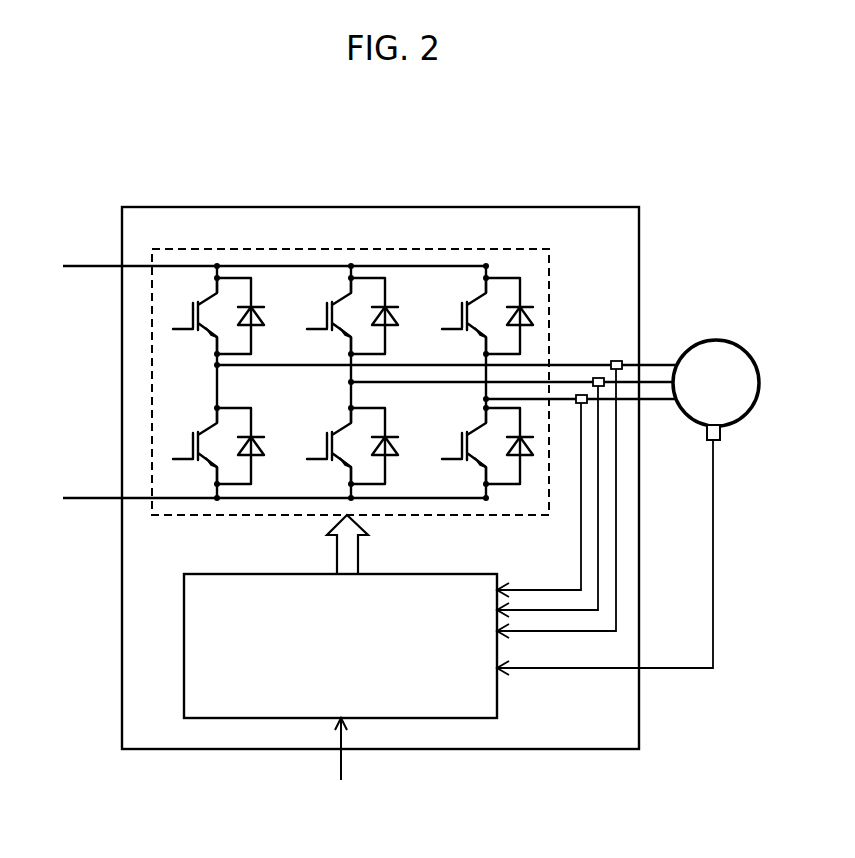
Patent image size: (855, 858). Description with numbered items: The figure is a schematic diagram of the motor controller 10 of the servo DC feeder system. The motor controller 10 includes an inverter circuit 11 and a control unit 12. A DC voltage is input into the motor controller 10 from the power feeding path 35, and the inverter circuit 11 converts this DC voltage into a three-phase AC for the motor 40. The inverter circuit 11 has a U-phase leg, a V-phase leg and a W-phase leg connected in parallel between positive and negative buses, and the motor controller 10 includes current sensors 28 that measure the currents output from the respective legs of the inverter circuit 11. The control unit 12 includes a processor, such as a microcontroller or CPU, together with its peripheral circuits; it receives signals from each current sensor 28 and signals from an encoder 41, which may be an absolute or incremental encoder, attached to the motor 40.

The motor controller 10 is at (583, 205).
The inverter circuit 11 is at (550, 262).
The control unit 12 is at (437, 572).
The current sensors 28 is at (616, 360).
The power feeding path 35 is at (80, 264).
The motor 40 is at (713, 338).
The encoder 41 is at (705, 448).